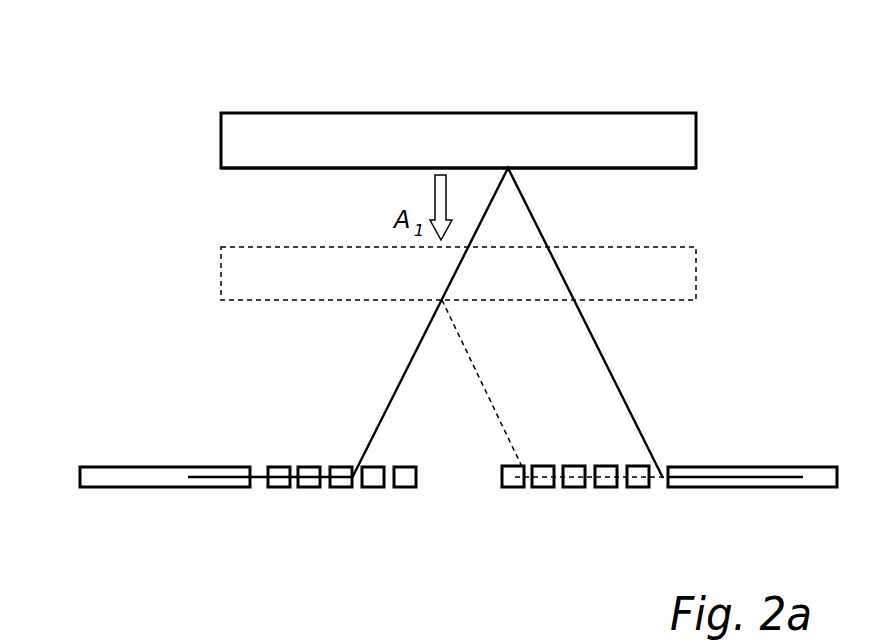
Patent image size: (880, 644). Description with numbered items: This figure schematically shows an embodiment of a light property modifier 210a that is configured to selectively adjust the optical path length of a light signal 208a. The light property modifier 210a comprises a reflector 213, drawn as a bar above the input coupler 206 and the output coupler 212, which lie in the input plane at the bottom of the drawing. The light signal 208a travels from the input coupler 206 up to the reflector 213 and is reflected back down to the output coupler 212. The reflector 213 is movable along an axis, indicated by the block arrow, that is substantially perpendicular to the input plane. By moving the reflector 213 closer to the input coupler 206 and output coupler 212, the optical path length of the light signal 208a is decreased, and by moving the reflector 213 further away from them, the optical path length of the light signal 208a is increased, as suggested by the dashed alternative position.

The light property modifier 210a is at (634, 94).
The reflector 213 is at (633, 168).
The light signal 208a is at (402, 375).
The input coupler 206 is at (307, 506).
The output coupler 212 is at (580, 506).